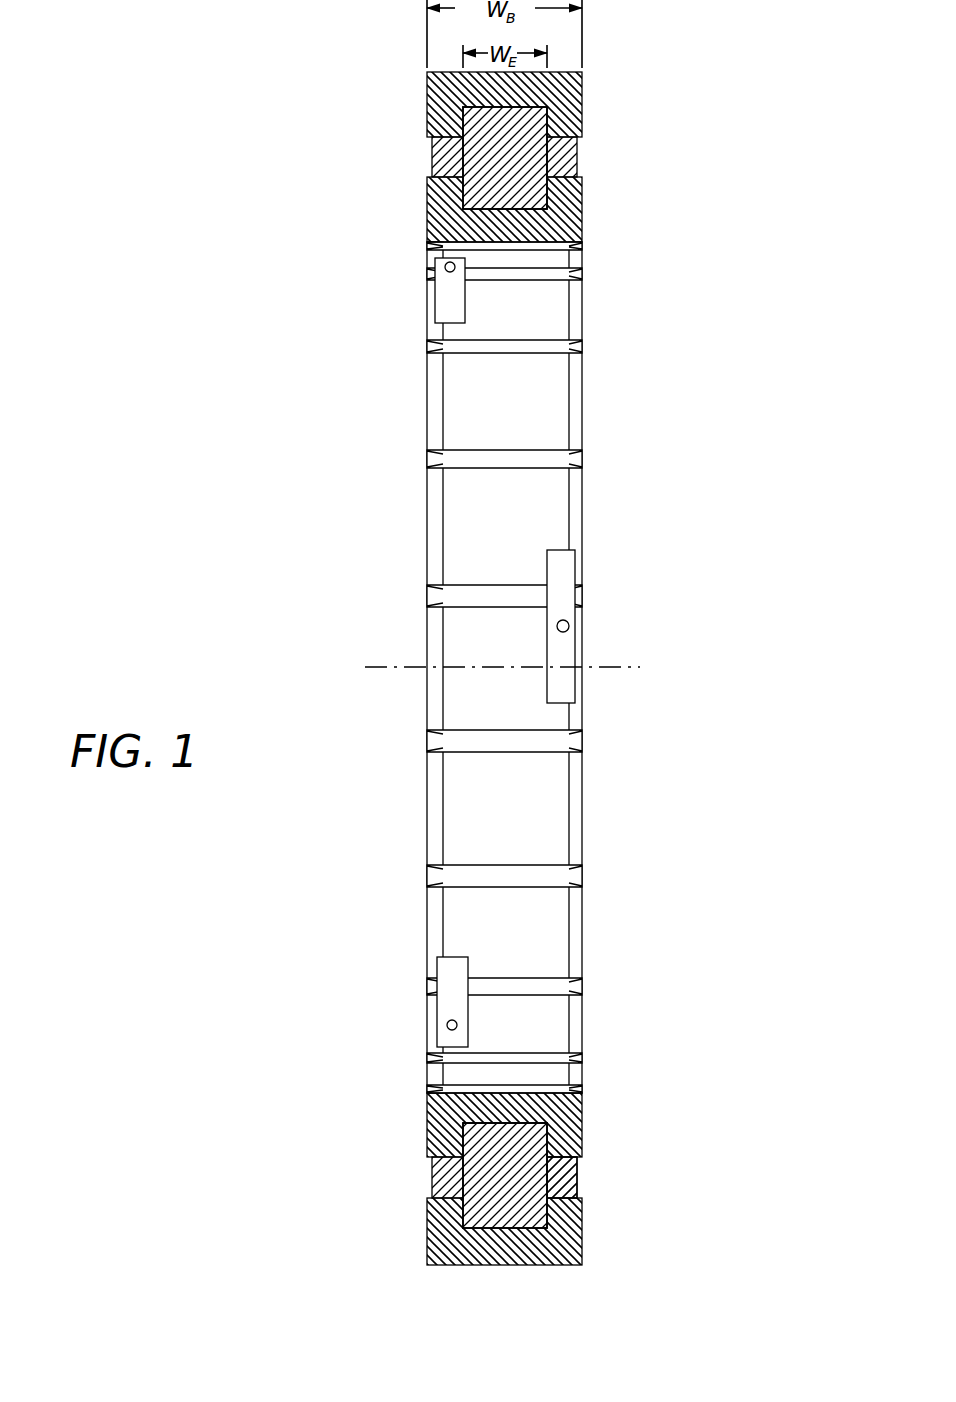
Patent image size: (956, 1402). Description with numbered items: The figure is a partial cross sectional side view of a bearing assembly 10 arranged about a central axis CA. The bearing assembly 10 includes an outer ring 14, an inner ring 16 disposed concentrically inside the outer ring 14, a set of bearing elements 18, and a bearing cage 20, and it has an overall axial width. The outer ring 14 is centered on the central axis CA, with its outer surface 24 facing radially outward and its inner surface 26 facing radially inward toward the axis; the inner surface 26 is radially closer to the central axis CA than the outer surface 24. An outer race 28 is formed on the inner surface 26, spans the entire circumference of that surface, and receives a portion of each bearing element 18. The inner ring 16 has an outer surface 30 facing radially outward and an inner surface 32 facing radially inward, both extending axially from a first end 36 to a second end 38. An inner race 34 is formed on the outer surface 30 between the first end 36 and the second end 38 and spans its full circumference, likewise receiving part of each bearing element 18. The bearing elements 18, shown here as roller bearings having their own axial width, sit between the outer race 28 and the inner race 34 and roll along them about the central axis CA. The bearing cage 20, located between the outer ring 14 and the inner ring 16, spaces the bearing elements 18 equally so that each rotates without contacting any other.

The bearing assembly 10 is at (266, 148).
The outer ring 14 is at (565, 100).
The inner ring 16 is at (443, 203).
The bearing elements 18 is at (480, 148).
The bearing cage 20 is at (565, 157).
The outer surface 24 is at (428, 1270).
The inner surface 26 is at (432, 1193).
The outer race 28 is at (525, 1217).
The outer surface 30 is at (563, 1160).
The inner surface 32 is at (504, 1080).
The inner race 34 is at (490, 1142).
The first end 36 is at (414, 495).
The second end 38 is at (595, 488).
The central axis CA is at (640, 667).